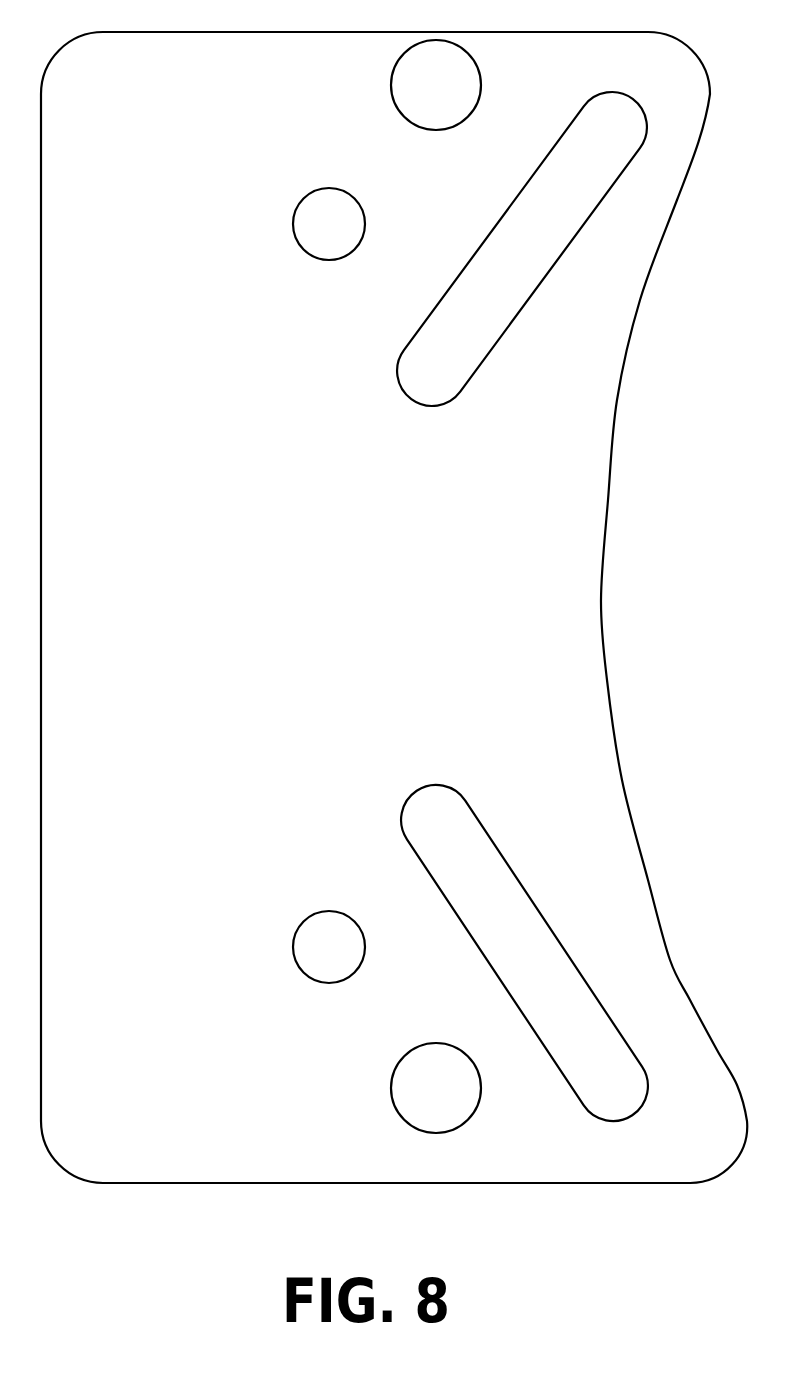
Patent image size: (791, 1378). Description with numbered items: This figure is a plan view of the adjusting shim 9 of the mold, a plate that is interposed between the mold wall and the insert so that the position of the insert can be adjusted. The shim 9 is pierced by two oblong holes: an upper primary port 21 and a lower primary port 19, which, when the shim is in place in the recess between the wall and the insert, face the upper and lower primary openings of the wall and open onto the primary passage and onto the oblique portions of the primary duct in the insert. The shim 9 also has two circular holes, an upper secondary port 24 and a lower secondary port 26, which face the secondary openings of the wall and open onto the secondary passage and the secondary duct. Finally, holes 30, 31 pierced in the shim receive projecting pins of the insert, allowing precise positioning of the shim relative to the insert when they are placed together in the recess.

The adjusting shim 9 is at (320, 599).
The lower primary port 19 is at (512, 902).
The upper primary port 21 is at (483, 317).
The upper secondary port 24 is at (325, 225).
The lower secondary port 26 is at (320, 940).
The hole 30 is at (425, 87).
The hole 31 is at (417, 1090).